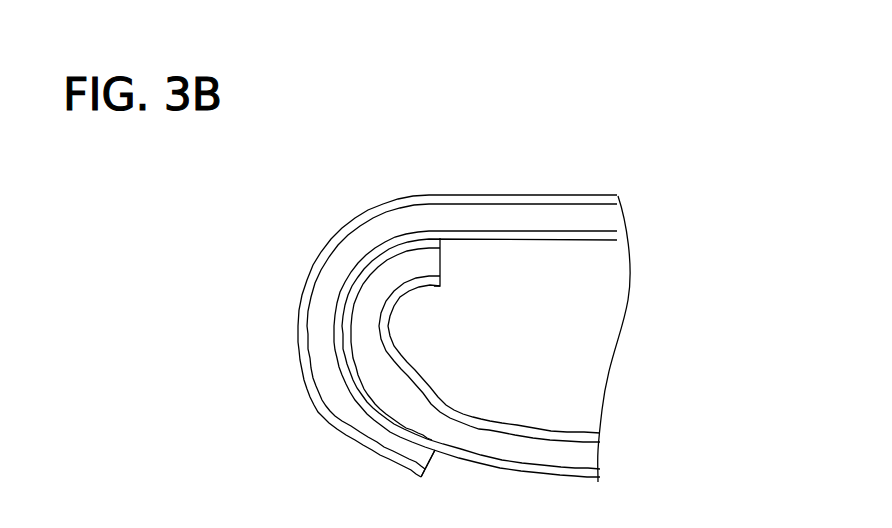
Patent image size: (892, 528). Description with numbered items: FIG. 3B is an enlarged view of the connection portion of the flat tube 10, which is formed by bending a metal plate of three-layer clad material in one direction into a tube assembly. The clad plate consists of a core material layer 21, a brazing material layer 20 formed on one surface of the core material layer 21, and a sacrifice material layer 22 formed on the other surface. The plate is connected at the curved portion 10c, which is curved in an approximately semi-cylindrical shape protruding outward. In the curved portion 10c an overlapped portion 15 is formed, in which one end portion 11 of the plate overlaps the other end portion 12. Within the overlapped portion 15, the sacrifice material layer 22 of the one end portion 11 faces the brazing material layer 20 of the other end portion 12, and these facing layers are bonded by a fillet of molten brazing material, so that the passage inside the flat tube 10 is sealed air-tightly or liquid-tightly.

The flat tube 10 is at (557, 171).
The curved portion 10c is at (343, 401).
The one end portion 11 is at (322, 354).
The other end portion 12 is at (367, 325).
The overlapped portion 15 is at (287, 270).
The brazing material layer 20 is at (612, 199).
The core material layer 21 is at (613, 216).
The sacrifice material layer 22 is at (612, 236).